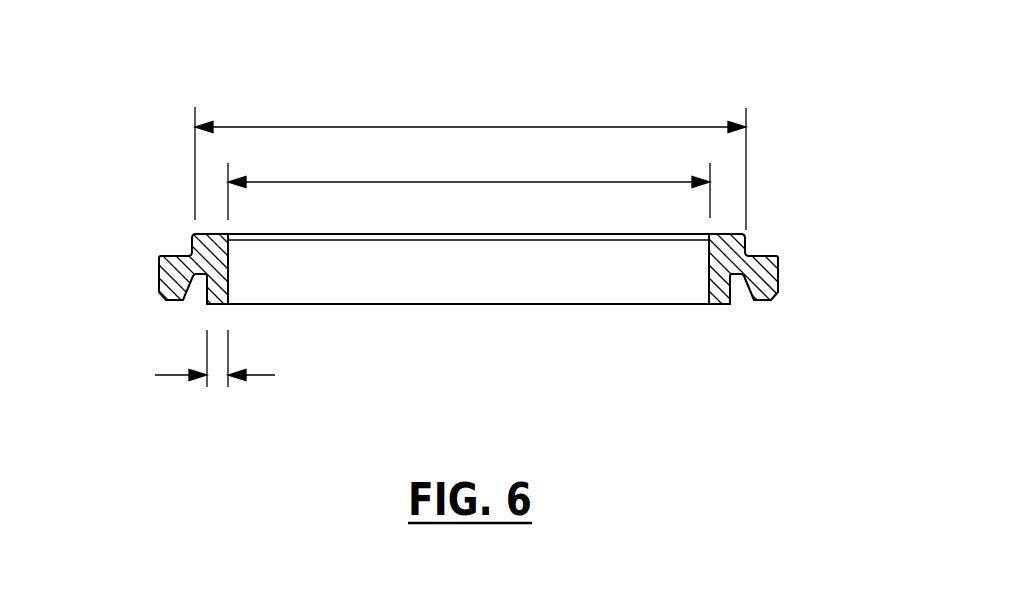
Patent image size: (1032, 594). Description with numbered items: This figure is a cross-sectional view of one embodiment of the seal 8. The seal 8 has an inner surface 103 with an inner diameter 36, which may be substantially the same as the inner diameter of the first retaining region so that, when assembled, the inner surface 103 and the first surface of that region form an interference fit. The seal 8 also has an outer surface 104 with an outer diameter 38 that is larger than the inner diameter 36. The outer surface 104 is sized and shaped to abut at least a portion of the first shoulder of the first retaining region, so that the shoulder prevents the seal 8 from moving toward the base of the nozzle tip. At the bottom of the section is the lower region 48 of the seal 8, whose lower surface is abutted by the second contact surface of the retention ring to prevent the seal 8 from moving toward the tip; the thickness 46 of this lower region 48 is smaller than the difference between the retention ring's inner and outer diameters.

The seal 8 is at (170, 210).
The outer diameter 38 is at (687, 126).
The inner diameter 36 is at (660, 181).
The outer surface 104 is at (730, 220).
The inner surface 103 is at (706, 274).
The lower region 48 is at (716, 313).
The thickness 46 is at (218, 378).